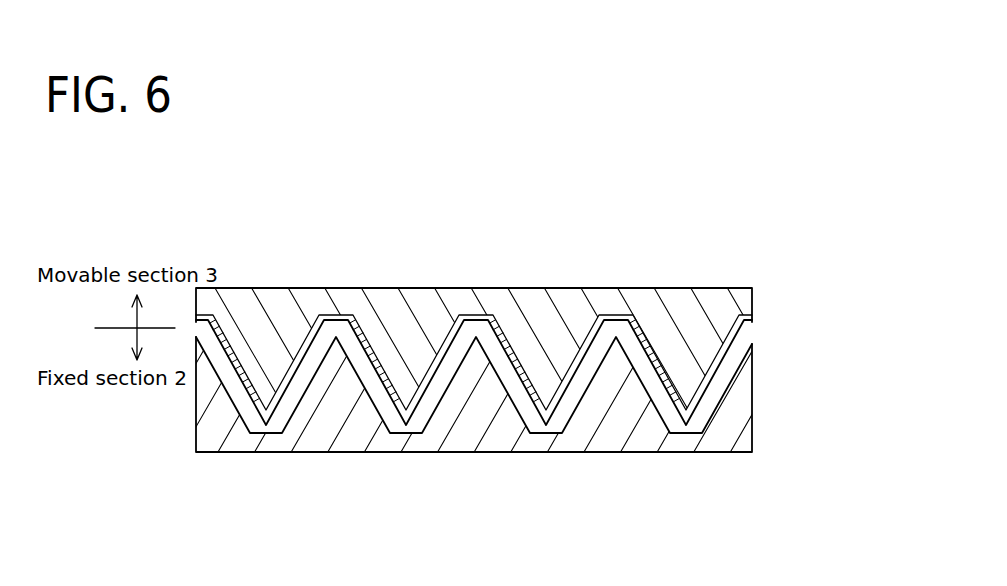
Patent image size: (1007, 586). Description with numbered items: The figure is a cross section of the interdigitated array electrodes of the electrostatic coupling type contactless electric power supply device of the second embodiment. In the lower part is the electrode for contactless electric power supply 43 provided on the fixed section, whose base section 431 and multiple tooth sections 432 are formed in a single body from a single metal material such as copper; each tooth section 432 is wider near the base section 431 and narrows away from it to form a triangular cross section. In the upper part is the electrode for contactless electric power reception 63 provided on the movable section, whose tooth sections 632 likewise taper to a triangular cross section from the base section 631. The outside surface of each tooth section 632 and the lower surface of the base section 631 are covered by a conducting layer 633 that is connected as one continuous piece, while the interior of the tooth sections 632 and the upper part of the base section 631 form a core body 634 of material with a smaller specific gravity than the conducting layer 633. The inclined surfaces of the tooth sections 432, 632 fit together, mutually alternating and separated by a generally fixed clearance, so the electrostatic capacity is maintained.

The electrode for contactless electric power reception 63 is at (532, 312).
The base section 631 is at (478, 291).
The tooth section 632 is at (540, 360).
The conducting layer 633 is at (752, 318).
The core body 634 is at (742, 303).
The electrode for contactless electric power supply 43 is at (473, 445).
The base section 431 is at (549, 440).
The tooth section 432 is at (618, 383).